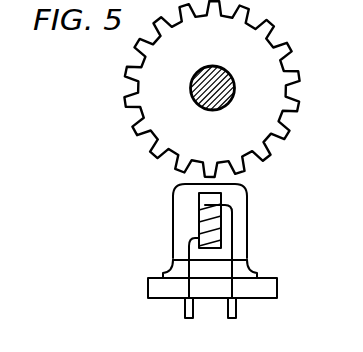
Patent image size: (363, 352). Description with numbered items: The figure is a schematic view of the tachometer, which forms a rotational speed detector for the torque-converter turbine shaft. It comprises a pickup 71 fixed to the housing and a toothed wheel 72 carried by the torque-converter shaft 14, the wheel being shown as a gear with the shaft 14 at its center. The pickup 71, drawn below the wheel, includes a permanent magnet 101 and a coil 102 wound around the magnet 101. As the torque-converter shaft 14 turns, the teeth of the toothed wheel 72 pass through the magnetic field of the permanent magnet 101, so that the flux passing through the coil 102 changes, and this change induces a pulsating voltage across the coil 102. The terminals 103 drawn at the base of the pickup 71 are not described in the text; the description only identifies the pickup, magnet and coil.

The toothed wheel 72 is at (275, 22).
The torque-converter shaft 14 is at (227, 87).
The pickup 71 is at (155, 279).
The permanent magnet 101 is at (213, 231).
The coil 102 is at (199, 209).
The terminal pins 103 is at (193, 310).